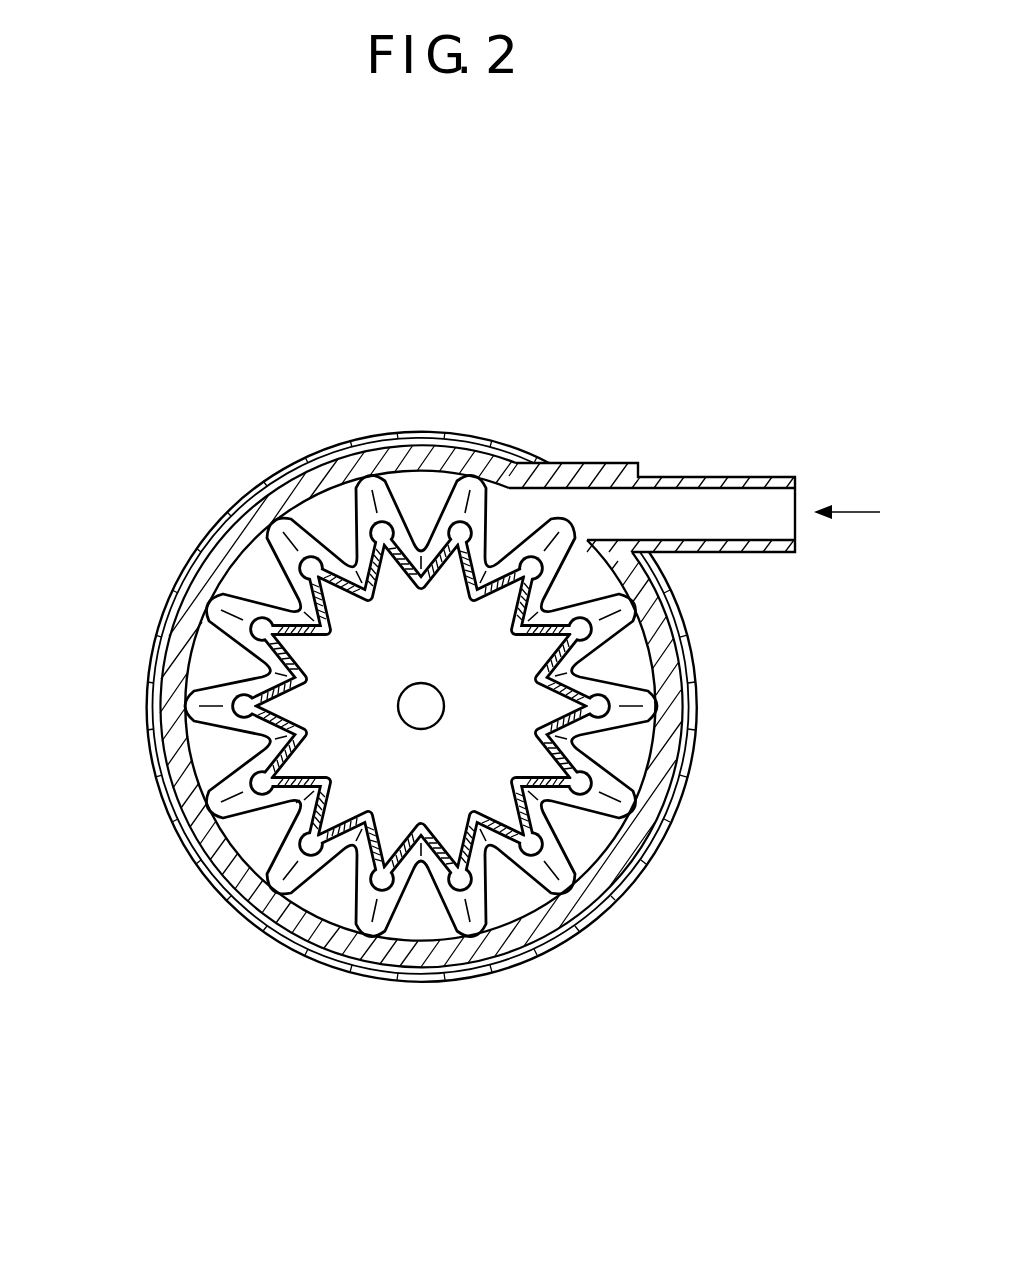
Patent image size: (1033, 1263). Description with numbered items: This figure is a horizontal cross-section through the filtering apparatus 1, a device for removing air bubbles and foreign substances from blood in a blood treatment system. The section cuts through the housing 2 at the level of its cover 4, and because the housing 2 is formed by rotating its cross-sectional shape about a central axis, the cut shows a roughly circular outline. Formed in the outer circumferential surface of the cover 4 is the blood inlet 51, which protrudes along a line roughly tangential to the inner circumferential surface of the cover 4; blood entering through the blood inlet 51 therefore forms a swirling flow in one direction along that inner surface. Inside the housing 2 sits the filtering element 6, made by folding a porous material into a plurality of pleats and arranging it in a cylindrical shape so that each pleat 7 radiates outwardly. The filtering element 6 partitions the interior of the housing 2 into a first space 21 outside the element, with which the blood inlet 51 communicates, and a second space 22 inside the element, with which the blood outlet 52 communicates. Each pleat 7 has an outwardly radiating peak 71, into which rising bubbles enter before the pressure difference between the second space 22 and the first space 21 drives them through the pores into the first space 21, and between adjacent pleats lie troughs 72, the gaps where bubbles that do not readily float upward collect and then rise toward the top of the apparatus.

The filtering apparatus 1 is at (662, 282).
The housing 2 is at (146, 631).
The first space 21 is at (207, 530).
The second space 22 is at (405, 645).
The cover 4 is at (658, 690).
The blood inlet 51 is at (752, 510).
The blood outlet 52 is at (300, 800).
The filtering element 6 is at (435, 506).
The pleat 7 is at (400, 708).
The peak 71 is at (552, 855).
The trough 72 is at (405, 890).